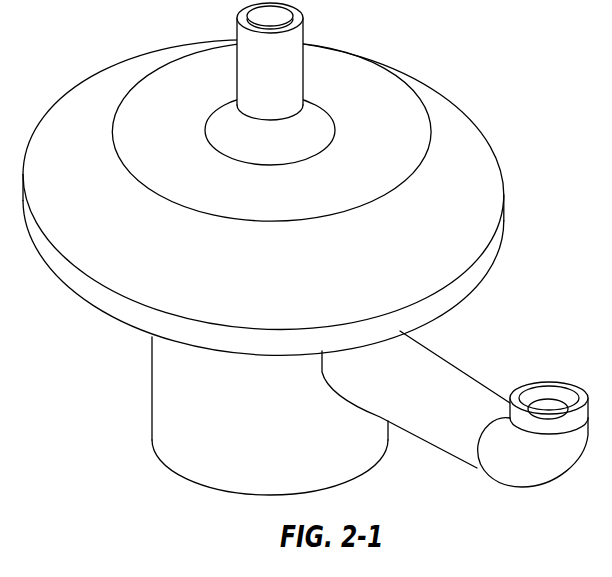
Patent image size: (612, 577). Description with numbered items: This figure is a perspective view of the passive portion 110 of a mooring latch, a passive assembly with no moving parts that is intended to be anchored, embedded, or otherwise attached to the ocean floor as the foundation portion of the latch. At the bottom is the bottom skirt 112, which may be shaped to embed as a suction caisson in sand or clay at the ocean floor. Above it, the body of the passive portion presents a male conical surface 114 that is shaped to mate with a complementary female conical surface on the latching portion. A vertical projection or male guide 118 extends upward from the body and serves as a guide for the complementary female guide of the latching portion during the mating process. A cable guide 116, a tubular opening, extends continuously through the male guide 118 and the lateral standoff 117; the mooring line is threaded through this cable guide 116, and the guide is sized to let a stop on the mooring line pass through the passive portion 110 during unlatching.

The passive portion 110 is at (118, 18).
The bottom skirt 112 is at (275, 463).
The male conical surface 114 is at (464, 152).
The cable guide 116 is at (545, 385).
The lateral standoff 117 is at (437, 442).
The male guide 118 is at (287, 67).